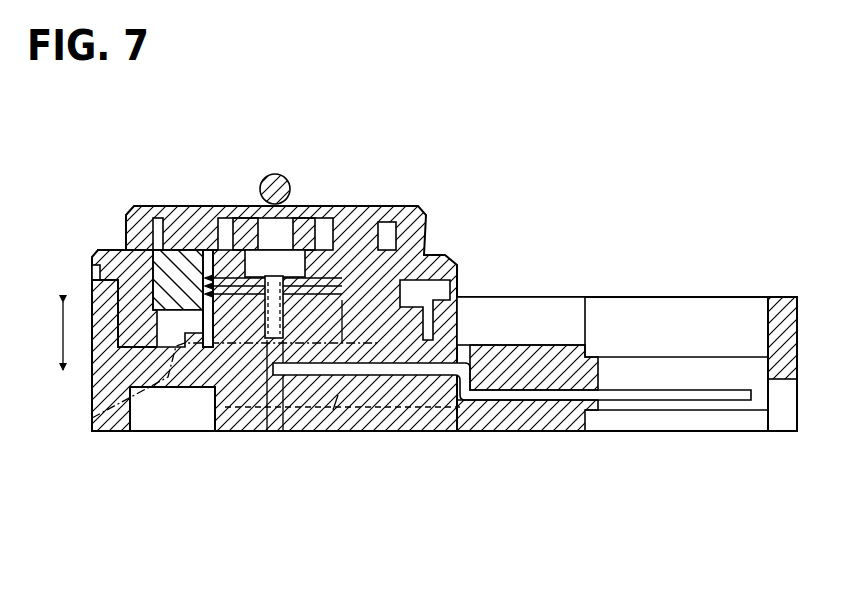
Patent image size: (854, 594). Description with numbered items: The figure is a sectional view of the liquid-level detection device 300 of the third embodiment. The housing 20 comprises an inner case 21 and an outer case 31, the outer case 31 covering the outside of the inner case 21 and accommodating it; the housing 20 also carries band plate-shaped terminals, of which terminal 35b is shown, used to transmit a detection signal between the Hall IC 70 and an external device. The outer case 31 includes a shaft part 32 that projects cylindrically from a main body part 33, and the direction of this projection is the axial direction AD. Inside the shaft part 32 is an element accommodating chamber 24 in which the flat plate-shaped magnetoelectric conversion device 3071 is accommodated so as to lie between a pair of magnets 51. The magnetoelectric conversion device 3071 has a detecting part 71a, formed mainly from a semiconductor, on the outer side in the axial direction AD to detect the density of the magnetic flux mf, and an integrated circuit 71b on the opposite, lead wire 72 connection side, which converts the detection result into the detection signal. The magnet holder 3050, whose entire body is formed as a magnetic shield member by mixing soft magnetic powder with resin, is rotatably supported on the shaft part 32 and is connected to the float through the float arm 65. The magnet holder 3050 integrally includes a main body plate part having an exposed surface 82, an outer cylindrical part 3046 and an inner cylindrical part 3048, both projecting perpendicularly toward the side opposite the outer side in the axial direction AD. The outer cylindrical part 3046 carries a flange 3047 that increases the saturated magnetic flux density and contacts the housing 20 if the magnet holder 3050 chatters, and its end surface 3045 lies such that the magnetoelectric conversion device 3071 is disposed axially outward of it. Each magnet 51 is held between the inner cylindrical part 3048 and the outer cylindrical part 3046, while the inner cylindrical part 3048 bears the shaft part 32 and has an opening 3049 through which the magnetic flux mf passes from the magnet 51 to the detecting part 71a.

The liquid-level detection device 300 is at (760, 250).
The housing 20 is at (782, 297).
The inner case 21 is at (470, 357).
The outer case 31 is at (572, 297).
The main body part 33 is at (143, 431).
The outer cylindrical part 3046 is at (157, 256).
The flange 3047 is at (100, 262).
The inner cylindrical part 3048 is at (176, 325).
The end surface 3045 is at (92, 420).
The opening 3049 is at (228, 218).
The magnet holder 3050 is at (160, 204).
The shaft part 32 is at (182, 218).
The exposed surface 82 is at (313, 218).
The float arm 65 is at (276, 174).
The magnets 51 is at (128, 248).
The Hall IC 70 is at (283, 340).
The detecting part 71a is at (260, 302).
The integrated circuit 71b is at (263, 302).
The magnetoelectric conversion device 3071 is at (227, 426).
The element accommodating chamber 24 is at (290, 363).
The lead wire 72 is at (333, 410).
The terminal 35b is at (365, 320).
The magnetic flux mf is at (232, 300).
The axial direction AD is at (62, 333).